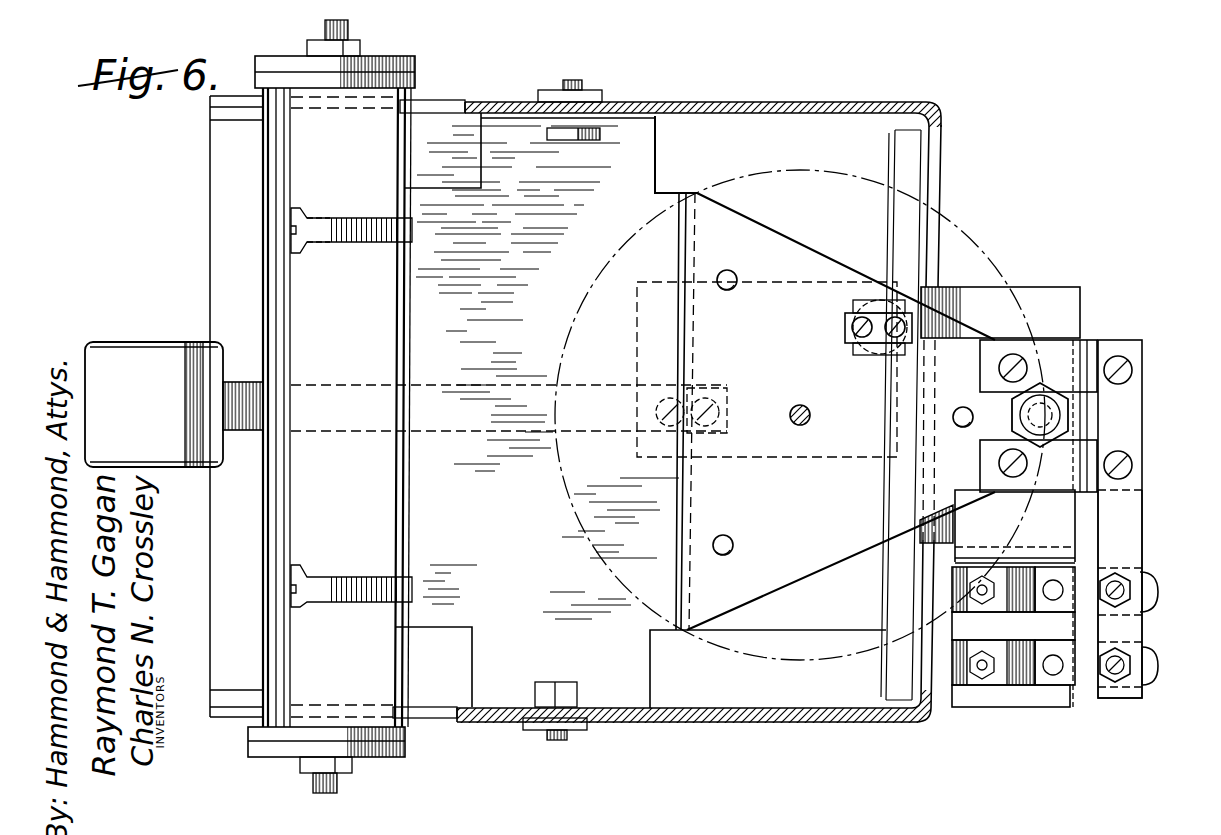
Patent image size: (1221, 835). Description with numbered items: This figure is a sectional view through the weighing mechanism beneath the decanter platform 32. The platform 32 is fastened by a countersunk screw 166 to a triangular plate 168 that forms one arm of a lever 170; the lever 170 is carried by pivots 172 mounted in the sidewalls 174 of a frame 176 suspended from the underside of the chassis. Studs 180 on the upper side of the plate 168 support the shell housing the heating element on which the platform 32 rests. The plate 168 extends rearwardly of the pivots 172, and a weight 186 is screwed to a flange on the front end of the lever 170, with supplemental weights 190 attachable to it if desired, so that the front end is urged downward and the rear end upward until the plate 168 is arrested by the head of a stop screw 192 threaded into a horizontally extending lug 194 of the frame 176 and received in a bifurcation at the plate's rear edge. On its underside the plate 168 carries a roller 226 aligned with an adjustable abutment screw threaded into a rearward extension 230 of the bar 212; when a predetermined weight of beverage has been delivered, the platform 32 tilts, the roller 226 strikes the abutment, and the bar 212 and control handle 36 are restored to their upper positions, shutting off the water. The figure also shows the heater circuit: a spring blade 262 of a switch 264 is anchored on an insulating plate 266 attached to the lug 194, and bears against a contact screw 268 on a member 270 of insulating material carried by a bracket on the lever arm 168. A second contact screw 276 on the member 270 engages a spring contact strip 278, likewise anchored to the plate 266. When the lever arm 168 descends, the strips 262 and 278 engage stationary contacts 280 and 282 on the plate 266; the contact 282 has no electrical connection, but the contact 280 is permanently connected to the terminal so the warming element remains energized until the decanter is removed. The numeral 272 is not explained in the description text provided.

The platform 32 is at (960, 227).
The control handle 36 is at (137, 352).
The countersunk screw 166 is at (811, 393).
The triangular plate 168 is at (800, 246).
The lever 170 is at (672, 158).
The pivots 172 is at (578, 83).
The sidewalls 174 is at (655, 102).
The frame 176 is at (751, 102).
The studs 180 is at (728, 270).
The weight 186 is at (360, 497).
The supplemental weights 190 is at (415, 80).
The stop screw 192 is at (1046, 386).
The horizontally extending lug 194 is at (1003, 293).
The bar 212 is at (245, 387).
The roller 226 is at (845, 323).
The rearward extension 230 is at (637, 357).
The spring blade 262 is at (1147, 680).
The switch 264 is at (1081, 696).
The insulating plate 266 is at (997, 702).
The contact screw 268 is at (1108, 666).
The member 270 is at (1123, 533).
The terminal strip 272 is at (1080, 340).
The contact screw 276 is at (1125, 572).
The spring contact strip 278 is at (1150, 592).
The stationary contact 280 is at (1053, 676).
The stationary contact 282 is at (1053, 545).